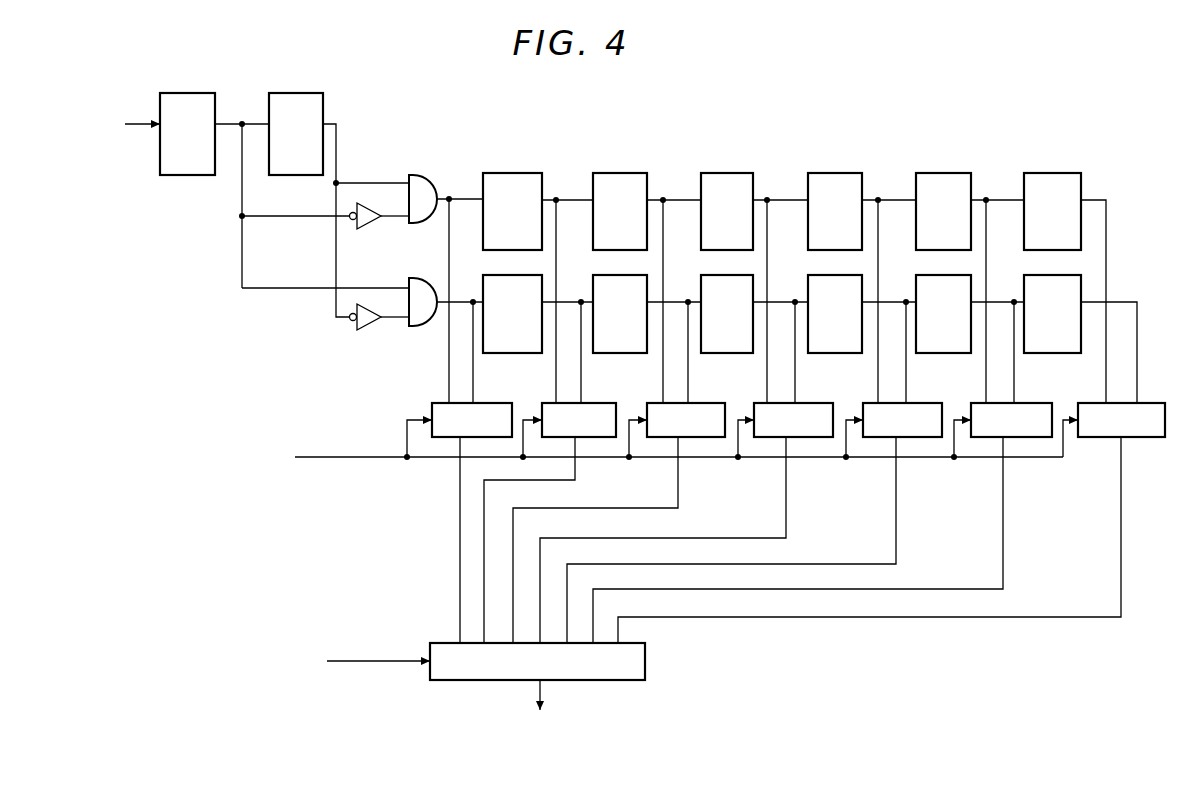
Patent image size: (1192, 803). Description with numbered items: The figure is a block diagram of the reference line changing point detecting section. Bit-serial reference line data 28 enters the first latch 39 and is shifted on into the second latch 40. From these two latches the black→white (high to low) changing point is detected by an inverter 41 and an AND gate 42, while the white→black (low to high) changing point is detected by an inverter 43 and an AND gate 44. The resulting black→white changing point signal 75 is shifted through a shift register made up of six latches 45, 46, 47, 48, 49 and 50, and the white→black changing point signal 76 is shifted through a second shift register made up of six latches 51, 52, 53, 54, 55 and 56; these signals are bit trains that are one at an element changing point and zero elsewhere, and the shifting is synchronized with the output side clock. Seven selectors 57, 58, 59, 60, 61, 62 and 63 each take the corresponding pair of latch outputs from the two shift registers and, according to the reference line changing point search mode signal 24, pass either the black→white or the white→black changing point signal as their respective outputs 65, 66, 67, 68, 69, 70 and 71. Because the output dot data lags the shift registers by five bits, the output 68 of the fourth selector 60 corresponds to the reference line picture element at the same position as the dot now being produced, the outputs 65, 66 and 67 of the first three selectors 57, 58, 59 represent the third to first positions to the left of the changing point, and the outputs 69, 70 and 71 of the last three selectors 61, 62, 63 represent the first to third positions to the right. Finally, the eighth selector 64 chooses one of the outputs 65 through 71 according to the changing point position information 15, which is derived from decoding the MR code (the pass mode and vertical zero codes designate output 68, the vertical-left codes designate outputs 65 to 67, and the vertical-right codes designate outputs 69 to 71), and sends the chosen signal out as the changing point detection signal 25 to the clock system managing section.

The changing point position information 15 is at (253, 655).
The reference line changing point search mode signal 24 is at (584, 452).
The changing point detection signal 25 is at (608, 718).
The reference line data 28 is at (99, 119).
The latch 1 (L1) 39 is at (188, 93).
The latch 2 (L2) 40 is at (297, 93).
The inverter 41 is at (370, 232).
The AND gate 42 is at (424, 175).
The inverter 43 is at (372, 332).
The AND gate 44 is at (424, 280).
The latch 10 (L10) 45 is at (512, 173).
The latch 11 (L11) 46 is at (620, 173).
The latch 12 (L12) 47 is at (727, 173).
The latch 13 (L13) 48 is at (835, 173).
The latch 14 (L14) 49 is at (943, 173).
The latch 15 (L15) 50 is at (1052, 173).
The latch 00 (L00) 51 is at (516, 275).
The latch 01 (L01) 52 is at (624, 275).
The latch 02 (L02) 53 is at (731, 275).
The latch 03 (L03) 54 is at (839, 275).
The latch 04 (L04) 55 is at (947, 275).
The latch 05 (L05) 56 is at (1056, 275).
The selector 0 (SEL0) 57 is at (498, 403).
The selector 1 (SEL1) 58 is at (602, 403).
The selector 2 (SEL2) 59 is at (711, 403).
The selector 3 (SEL3) 60 is at (819, 403).
The selector 4 (SEL4) 61 is at (928, 403).
The selector 5 (SEL5) 62 is at (1038, 403).
The selector 6 (SEL6) 63 is at (1151, 403).
The selector 7 (SEL7) 64 is at (645, 650).
The output of SEL0 65 is at (460, 504).
The output of SEL1 66 is at (484, 540).
The output of SEL2 67 is at (512, 518).
The output of SEL3 68 is at (553, 524).
The output of SEL4 69 is at (593, 550).
The output of SEL5 70 is at (623, 576).
The output of SEL6 71 is at (653, 604).
The black→white changing point signal 75 is at (454, 198).
The white→black changing point signal 76 is at (465, 300).